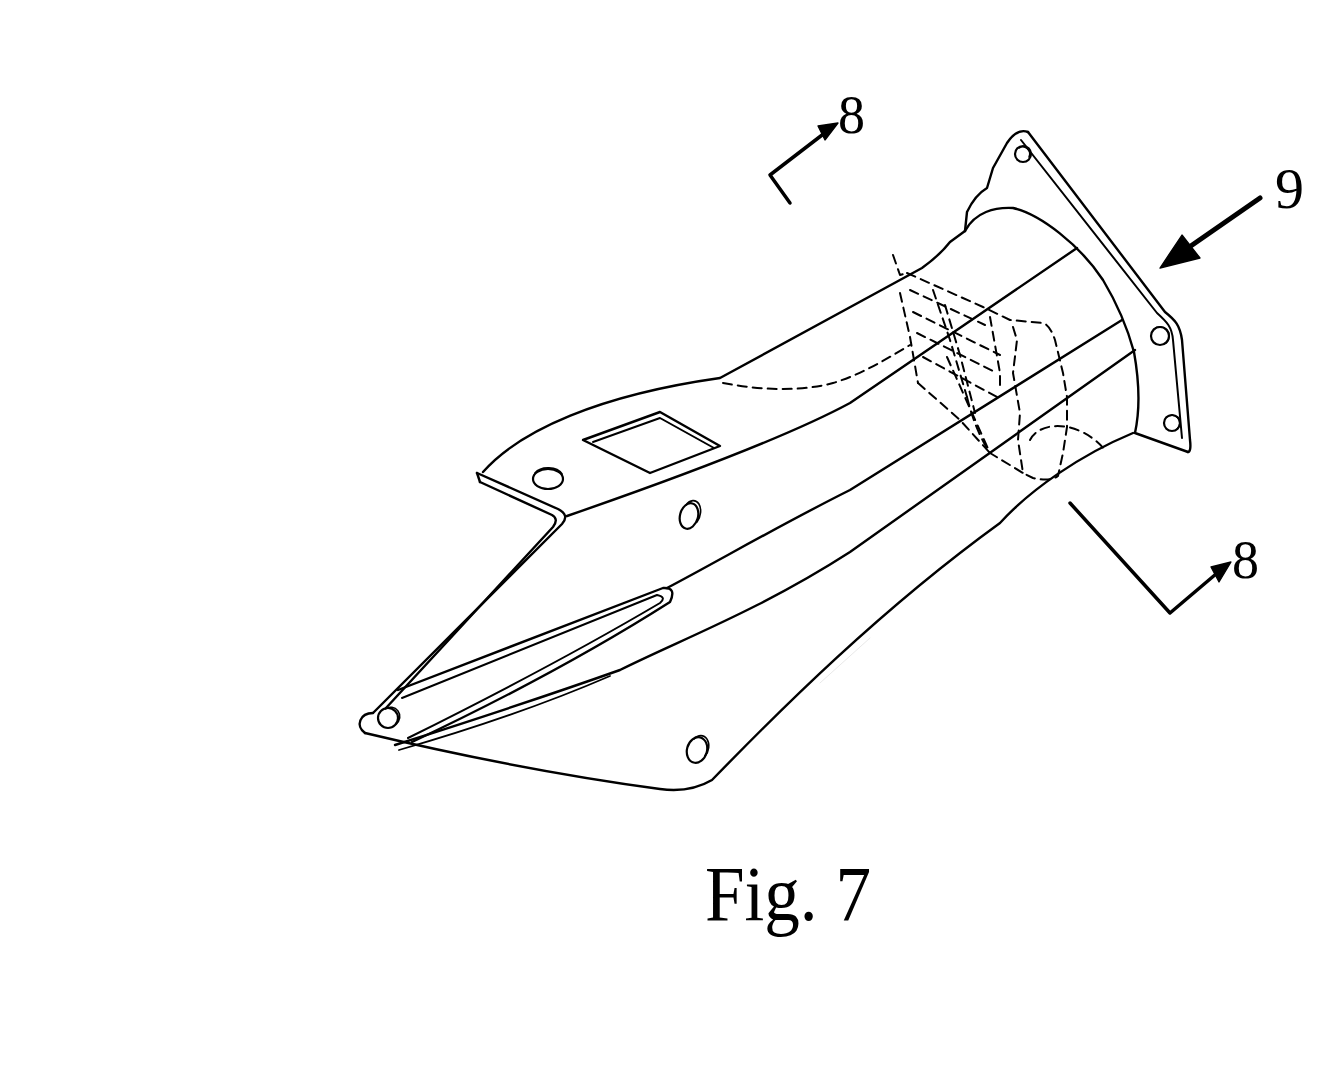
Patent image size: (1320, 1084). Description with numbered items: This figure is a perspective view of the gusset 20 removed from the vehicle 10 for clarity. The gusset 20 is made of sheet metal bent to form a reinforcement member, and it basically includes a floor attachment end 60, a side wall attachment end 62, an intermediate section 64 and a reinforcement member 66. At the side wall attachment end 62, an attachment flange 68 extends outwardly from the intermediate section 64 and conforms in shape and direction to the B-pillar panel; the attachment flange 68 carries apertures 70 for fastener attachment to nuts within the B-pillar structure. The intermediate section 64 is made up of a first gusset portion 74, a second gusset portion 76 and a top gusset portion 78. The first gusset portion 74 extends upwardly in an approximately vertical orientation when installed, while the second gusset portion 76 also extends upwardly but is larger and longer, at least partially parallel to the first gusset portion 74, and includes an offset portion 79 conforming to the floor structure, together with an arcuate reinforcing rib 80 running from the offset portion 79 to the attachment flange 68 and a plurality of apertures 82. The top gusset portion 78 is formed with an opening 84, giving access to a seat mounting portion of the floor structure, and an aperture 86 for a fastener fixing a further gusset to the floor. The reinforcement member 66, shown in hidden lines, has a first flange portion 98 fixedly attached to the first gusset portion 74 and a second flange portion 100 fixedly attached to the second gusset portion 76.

The vehicle 10 is at (294, 687).
The gusset 20 is at (612, 331).
The floor attachment end 60 is at (528, 568).
The side wall attachment end 62 is at (1097, 227).
The intermediate section 64 is at (903, 598).
The reinforcement member 66 is at (1003, 457).
The attachment flange 68 is at (1050, 210).
The apertures 70 is at (1014, 153).
The first gusset portion 74 is at (805, 375).
The second gusset portion 76 is at (780, 660).
The top gusset portion 78 is at (700, 400).
The offset portion 79 is at (457, 692).
The reinforcing rib 80 is at (780, 562).
The apertures 82 is at (702, 510).
The opening 84 is at (618, 428).
The aperture 86 is at (534, 475).
The first flange portion 98 is at (893, 255).
The second flange portion 100 is at (1105, 450).